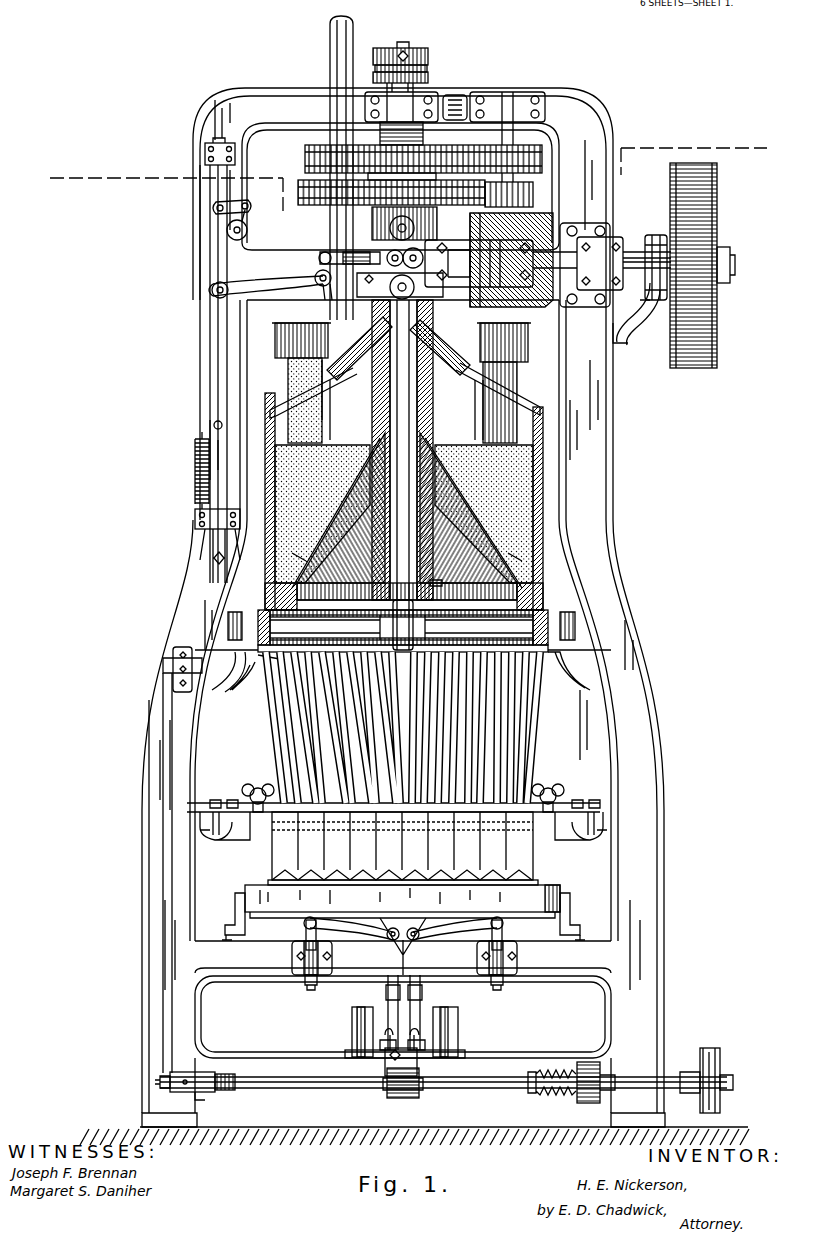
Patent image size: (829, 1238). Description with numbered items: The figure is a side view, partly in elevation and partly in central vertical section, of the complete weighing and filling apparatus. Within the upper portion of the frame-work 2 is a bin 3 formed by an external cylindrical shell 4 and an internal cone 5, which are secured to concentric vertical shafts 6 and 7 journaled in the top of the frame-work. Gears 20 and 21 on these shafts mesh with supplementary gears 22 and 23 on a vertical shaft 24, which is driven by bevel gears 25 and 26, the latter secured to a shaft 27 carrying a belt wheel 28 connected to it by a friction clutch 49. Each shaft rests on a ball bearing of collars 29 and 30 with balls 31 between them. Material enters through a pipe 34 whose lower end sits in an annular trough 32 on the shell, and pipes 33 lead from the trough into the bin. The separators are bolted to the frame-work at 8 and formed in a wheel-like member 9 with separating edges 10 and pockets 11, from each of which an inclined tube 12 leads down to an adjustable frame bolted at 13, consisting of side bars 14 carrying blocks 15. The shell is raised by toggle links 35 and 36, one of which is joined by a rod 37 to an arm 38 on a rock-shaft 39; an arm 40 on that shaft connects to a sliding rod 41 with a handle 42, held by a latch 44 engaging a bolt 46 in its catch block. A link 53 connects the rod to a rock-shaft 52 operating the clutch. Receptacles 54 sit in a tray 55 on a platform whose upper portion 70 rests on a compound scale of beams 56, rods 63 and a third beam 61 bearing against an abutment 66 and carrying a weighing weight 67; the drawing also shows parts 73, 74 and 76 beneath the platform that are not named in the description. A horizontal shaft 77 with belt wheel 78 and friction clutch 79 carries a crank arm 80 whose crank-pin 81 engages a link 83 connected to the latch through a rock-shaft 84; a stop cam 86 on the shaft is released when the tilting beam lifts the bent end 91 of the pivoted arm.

The frame-work 2 is at (600, 448).
The bin 3 is at (510, 490).
The external cylindrical shell 4 is at (545, 518).
The internal cone 5 is at (520, 580).
The vertical shaft 6 is at (413, 50).
The vertical shaft 7 is at (430, 296).
The bolting of separators 8 is at (238, 640).
The wheel-like member 9 is at (252, 665).
The separating edges 10 is at (262, 615).
The pocket 11 is at (555, 630).
The inclined tube 12 is at (290, 740).
The bolting of frame 13 is at (222, 800).
The side bars 14 is at (248, 825).
The blocks 15 is at (558, 797).
The gear 20 is at (458, 136).
The gear 21 is at (312, 180).
The supplementary gear 22 is at (540, 152).
The supplementary gear 23 is at (533, 193).
The vertical shaft 24 is at (528, 136).
The bevel gear 25 is at (540, 230).
The bevel gear 26 is at (500, 290).
The shaft 27 is at (620, 262).
The belt wheel 28 is at (705, 232).
The lower collar 29 is at (428, 78).
The upper collar 30 is at (428, 56).
The balls 31 is at (427, 70).
The annular trough 32 is at (528, 348).
The pipes 33 is at (290, 395).
The pipe 34 is at (340, 58).
The links 35 is at (430, 295).
The links 36 is at (320, 255).
The rod 37 is at (352, 264).
The arm 38 is at (310, 270).
The rock-shaft 39 is at (322, 290).
The arm 40 is at (225, 272).
The sliding rod 41 is at (210, 360).
The operating handle 42 is at (200, 436).
The latch 44 is at (215, 540).
The bolt 46 is at (214, 566).
The friction clutch 49 is at (660, 310).
The rock-shaft 52 is at (247, 230).
The link 53 is at (248, 203).
The receptacles 54 is at (545, 846).
The tray 55 is at (538, 880).
The scale beams 56 is at (403, 946).
The third scale beam 61 is at (427, 1035).
The rods 63 is at (420, 1005).
The fixed abutment 66 is at (352, 1022).
The weighing weight 67 is at (418, 1090).
The upper portion of platform 70 is at (560, 890).
The bracket 73 is at (238, 910).
The rod 74 is at (300, 935).
The nut 76 is at (310, 990).
The horizontal shaft 77 is at (305, 1088).
The belt wheel 78 is at (722, 1058).
The friction clutch 79 is at (572, 1090).
The crank arm 80 is at (180, 1072).
The crank-pin 81 is at (160, 1080).
The link 83 is at (163, 1005).
The rock-shaft 84 is at (172, 677).
The stop cam 86 is at (388, 1090).
The bent end of arm 91 is at (402, 1035).